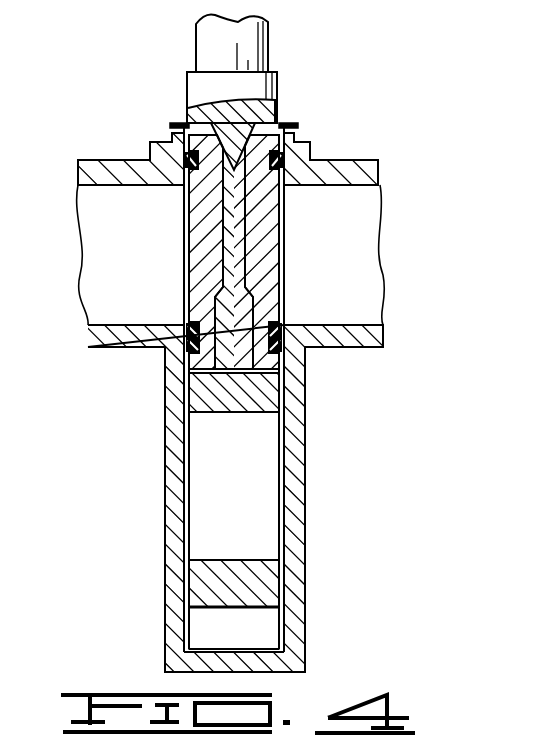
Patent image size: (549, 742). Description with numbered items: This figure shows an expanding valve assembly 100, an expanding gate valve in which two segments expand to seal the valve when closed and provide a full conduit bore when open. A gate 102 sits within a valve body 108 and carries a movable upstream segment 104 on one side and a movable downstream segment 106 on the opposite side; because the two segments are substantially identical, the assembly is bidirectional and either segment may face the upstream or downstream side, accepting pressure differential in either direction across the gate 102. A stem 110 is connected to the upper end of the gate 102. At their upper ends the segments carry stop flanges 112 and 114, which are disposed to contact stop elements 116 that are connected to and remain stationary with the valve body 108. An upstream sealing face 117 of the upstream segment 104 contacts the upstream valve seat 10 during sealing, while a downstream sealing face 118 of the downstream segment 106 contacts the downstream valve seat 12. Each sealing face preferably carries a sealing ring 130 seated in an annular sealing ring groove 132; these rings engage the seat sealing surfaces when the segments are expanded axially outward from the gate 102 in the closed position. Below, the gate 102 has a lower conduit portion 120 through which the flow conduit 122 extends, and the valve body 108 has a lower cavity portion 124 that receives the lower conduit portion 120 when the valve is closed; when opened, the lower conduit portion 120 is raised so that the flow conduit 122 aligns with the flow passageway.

The expanding valve assembly 100 is at (125, 58).
The stem 110 is at (212, 28).
The stop flange 112 is at (278, 128).
The stop flange 114 is at (178, 124).
The stop elements 116 is at (155, 148).
The valve body 108 is at (118, 162).
The upstream segment 104 is at (262, 252).
The downstream segment 106 is at (206, 243).
The downstream valve seat 12 is at (177, 186).
The upstream valve seat 10 is at (288, 186).
The sealing ring 130 is at (186, 168).
The annular sealing ring groove 132 is at (186, 320).
The downstream sealing face 118 is at (184, 267).
The upstream sealing face 117 is at (284, 272).
The lower conduit portion 120 is at (186, 401).
The flow conduit 122 is at (226, 560).
The lower cavity portion 124 is at (305, 468).
The gate 102 is at (205, 610).